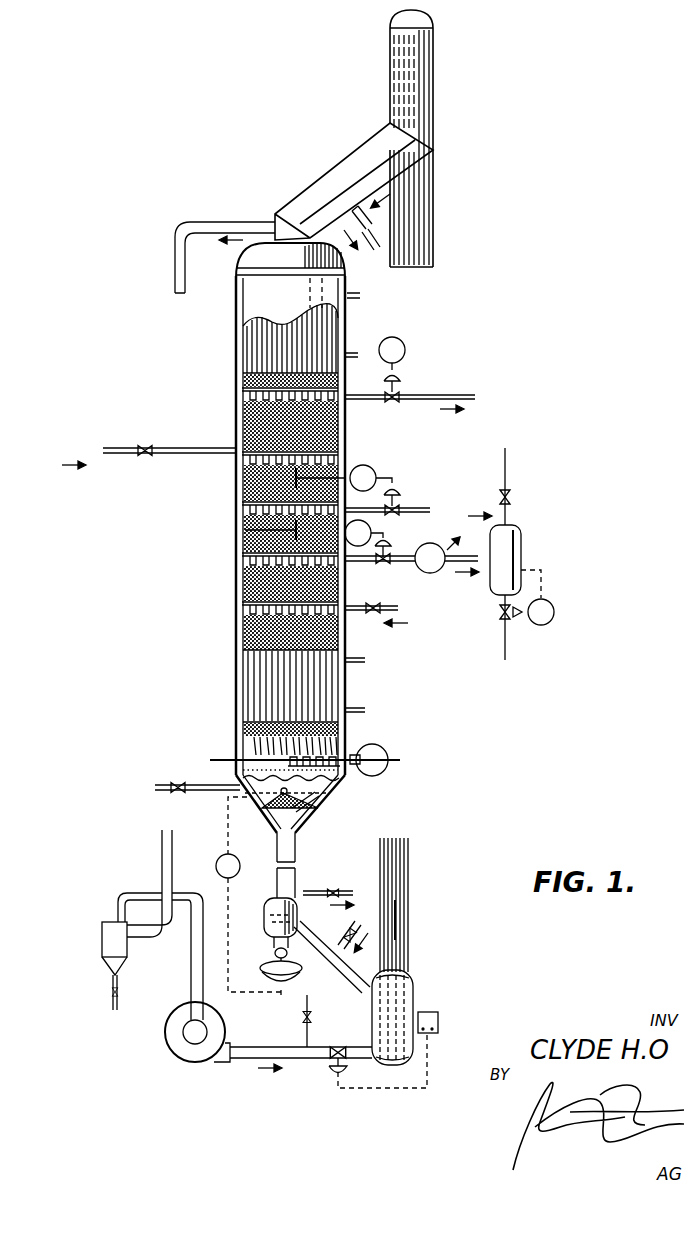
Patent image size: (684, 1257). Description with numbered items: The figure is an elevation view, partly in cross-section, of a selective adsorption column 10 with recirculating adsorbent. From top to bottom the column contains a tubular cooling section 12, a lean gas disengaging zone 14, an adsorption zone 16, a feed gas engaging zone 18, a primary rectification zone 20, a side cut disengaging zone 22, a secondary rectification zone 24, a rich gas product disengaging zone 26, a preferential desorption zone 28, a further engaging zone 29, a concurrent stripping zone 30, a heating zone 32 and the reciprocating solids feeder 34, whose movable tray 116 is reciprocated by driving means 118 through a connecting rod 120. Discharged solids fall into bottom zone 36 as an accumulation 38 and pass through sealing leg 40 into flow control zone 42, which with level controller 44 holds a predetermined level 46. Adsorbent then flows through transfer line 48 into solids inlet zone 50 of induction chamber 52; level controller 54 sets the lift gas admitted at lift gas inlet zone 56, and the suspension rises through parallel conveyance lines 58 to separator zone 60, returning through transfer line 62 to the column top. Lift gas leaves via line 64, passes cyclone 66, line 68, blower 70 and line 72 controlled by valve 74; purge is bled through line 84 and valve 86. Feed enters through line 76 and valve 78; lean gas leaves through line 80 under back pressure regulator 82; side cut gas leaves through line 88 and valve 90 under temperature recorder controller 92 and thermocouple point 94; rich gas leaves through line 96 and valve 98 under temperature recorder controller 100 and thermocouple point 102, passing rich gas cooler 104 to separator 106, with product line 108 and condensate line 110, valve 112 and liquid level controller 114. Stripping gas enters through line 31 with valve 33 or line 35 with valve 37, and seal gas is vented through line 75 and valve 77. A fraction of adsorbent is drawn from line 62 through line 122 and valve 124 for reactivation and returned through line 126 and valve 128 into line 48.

The selective adsorption column 10 is at (268, 262).
The tubular cooling section 12 is at (282, 350).
The lean gas disengaging zone 14 is at (242, 391).
The adsorption zone 16 is at (280, 420).
The feed gas engaging zone 18 is at (245, 452).
The primary rectification zone 20 is at (302, 478).
The side cut disengaging zone 22 is at (245, 505).
The secondary rectification zone 24 is at (244, 528).
The rich gas product disengaging zone 26 is at (245, 553).
The preferential desorption zone 28 is at (244, 577).
The engaging zone 29 is at (244, 602).
The concurrent stripping zone 30 is at (244, 637).
The stripping gas line 31 is at (358, 612).
The heating zone 32 is at (280, 678).
The stripping gas valve 33 is at (372, 615).
The reciprocating solids feeder 34 is at (248, 748).
The stripping gas line 35 is at (165, 792).
The bottom zone 36 is at (320, 797).
The stripping gas valve 37 is at (190, 793).
The accumulation 38 is at (300, 812).
The sealing leg 40 is at (292, 870).
The vent gas removal and solids flow control zone 42 is at (266, 922).
The level controller 44 is at (236, 874).
The predetermined level 46 is at (278, 806).
The transfer line 48 is at (345, 975).
The solids inlet zone 50 is at (395, 1005).
The induction chamber 52 is at (410, 975).
The level controller 54 is at (440, 1022).
The lift gas inlet zone 56 is at (400, 1068).
The parallel conveyance lines 58 is at (404, 858).
The separator zone 60 is at (408, 80).
The transfer line 62 is at (320, 176).
The lift gas removal line 64 is at (222, 222).
The cyclone 66 is at (105, 950).
The fines-free lift gas line 68 is at (118, 898).
The blower 70 is at (190, 1048).
The lift gas line 72 is at (258, 1060).
The valve 74 is at (335, 1075).
The seal gas line 75 is at (333, 890).
The feed gas line 76 is at (120, 456).
The valve 77 is at (340, 890).
The valve 78 is at (146, 444).
The lean gas line 80 is at (368, 402).
The back pressure regulator 82 is at (404, 380).
The purge gas removal line 84 is at (305, 1025).
The valve 86 is at (304, 1016).
The side cut gas line 88 is at (390, 515).
The valve 90 is at (394, 492).
The temperature recorder controller 92 is at (378, 480).
The thermocouple point 94 is at (330, 464).
The rich gas line 96 is at (418, 566).
The valve 98 is at (383, 568).
The temperature recorder controller 100 is at (372, 563).
The thermocouple point 102 is at (245, 530).
The rich gas cooler 104 is at (452, 548).
The separator 106 is at (512, 553).
The product rich gas line 108 is at (505, 512).
The condensate line 110 is at (506, 647).
The valve 112 is at (503, 626).
The liquid level controller 114 is at (554, 610).
The movable tray 116 is at (330, 757).
The driving means 118 is at (388, 762).
The connecting rod 120 is at (365, 757).
The adsorbent withdrawal line 122 is at (366, 222).
The valve 124 is at (378, 240).
The reactivated adsorbent return line 126 is at (394, 920).
The valve 128 is at (342, 935).